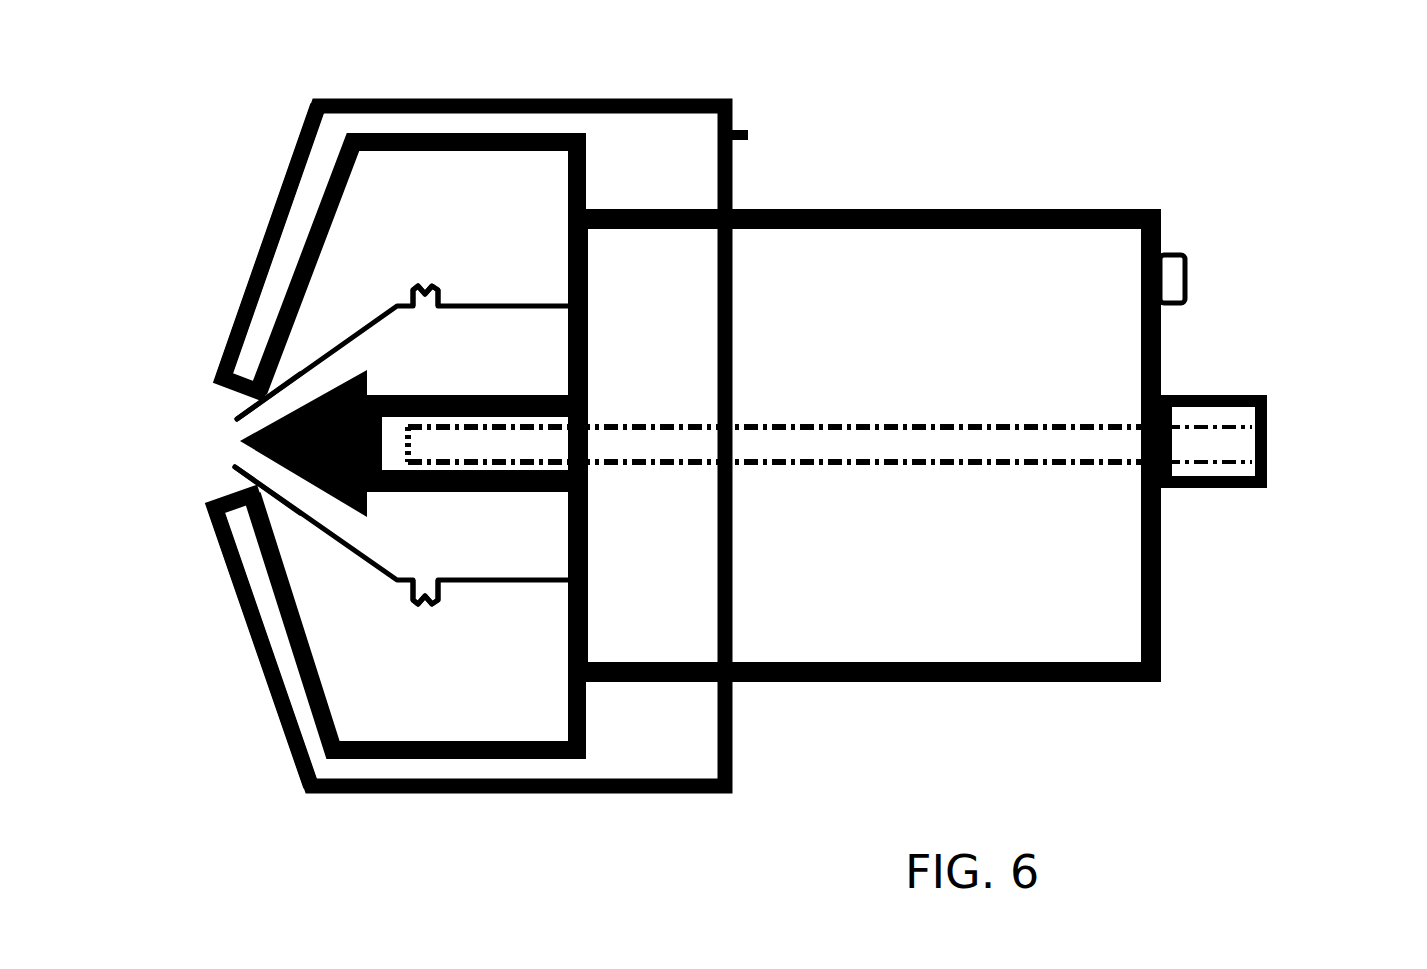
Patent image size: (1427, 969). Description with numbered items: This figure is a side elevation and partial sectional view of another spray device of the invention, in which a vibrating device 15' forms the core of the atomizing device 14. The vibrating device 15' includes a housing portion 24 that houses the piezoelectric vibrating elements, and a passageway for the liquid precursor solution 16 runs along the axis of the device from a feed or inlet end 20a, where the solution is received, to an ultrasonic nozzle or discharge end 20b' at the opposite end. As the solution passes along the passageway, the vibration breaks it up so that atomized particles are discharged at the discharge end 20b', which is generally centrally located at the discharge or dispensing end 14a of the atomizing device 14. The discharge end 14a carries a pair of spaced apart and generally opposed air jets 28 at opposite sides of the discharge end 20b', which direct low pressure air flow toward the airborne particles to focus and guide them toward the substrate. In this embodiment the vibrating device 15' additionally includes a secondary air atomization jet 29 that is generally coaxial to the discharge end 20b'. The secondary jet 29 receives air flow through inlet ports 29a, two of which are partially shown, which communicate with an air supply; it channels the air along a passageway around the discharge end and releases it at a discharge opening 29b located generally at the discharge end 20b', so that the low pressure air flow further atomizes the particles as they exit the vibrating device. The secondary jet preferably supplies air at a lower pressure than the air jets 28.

The atomizing device 14 is at (810, 135).
The discharge end 14a is at (208, 265).
The vibrating device 15' is at (881, 366).
The precursor solution 16 is at (932, 440).
The inlet end 20a is at (1267, 420).
The discharge end 20b' is at (338, 464).
The housing portion 24 is at (965, 643).
The air jets 28 is at (243, 355).
The secondary air atomization jet 29 is at (351, 312).
The inlet ports 29a is at (427, 283).
The discharge opening 29b is at (236, 424).